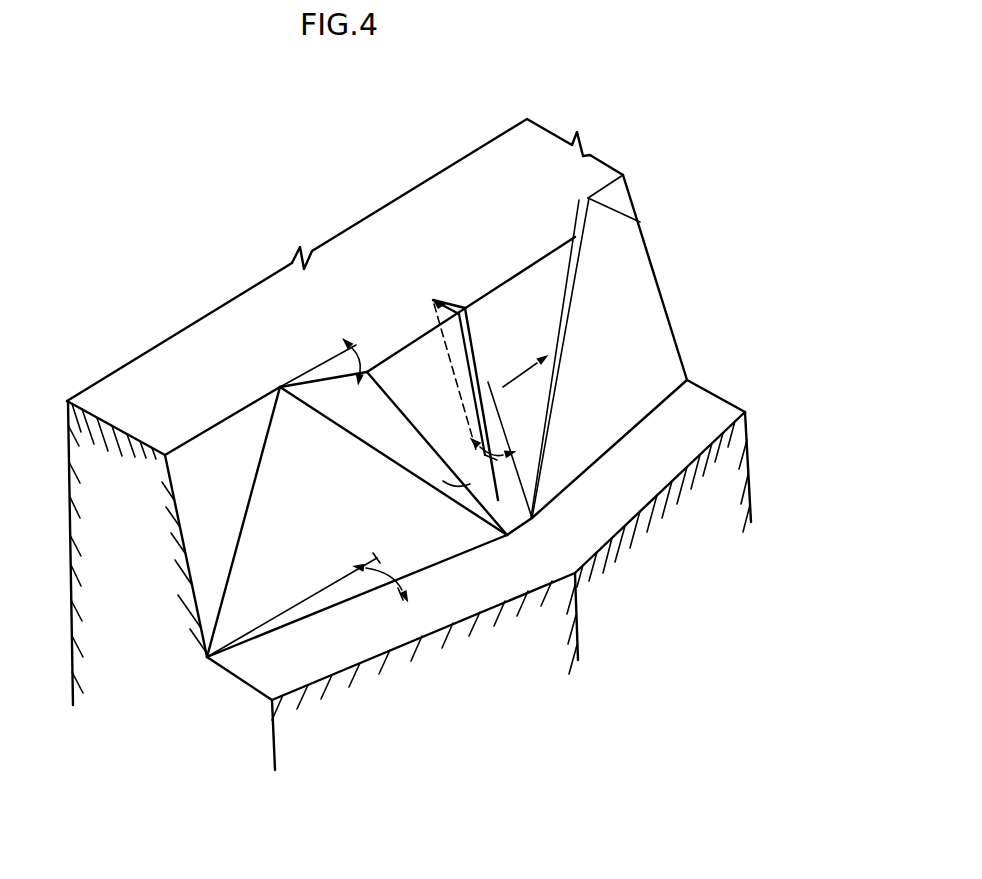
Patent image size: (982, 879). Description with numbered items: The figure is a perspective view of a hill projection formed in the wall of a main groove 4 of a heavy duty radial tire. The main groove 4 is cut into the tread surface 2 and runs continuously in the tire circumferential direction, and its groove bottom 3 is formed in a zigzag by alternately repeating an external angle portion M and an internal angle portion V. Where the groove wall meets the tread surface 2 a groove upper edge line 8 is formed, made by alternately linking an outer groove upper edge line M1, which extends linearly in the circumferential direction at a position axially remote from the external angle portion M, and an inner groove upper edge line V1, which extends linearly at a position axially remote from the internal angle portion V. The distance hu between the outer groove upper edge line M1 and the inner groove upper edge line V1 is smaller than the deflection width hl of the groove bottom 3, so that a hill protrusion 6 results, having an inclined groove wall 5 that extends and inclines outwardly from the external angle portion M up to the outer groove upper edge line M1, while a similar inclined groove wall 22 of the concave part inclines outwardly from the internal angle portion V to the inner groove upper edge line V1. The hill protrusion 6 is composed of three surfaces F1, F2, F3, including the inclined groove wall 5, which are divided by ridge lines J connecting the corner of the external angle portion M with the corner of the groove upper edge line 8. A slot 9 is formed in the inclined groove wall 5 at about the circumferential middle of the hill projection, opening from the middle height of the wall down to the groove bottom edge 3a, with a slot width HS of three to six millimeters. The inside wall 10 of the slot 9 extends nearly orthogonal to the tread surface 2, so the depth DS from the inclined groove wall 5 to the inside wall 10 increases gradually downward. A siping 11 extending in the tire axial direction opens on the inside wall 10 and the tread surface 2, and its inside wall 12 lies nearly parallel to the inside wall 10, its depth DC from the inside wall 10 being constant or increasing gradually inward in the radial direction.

The tread surface 2 is at (457, 193).
The groove upper edge line 8 is at (180, 223).
The inclined groove wall 22 is at (201, 525).
The inner groove upper edge line V1 is at (190, 437).
The outer groove upper edge line M1 is at (374, 364).
The inside wall of the siping 12 is at (437, 290).
The siping 11 is at (447, 297).
The inside wall of the slot 10 is at (470, 379).
The depth of the siping inside wall DC is at (462, 352).
The slot 9 is at (487, 470).
The inclined groove wall 5 is at (423, 407).
The internal angle portion V is at (208, 658).
The main groove 4 is at (232, 668).
The groove bottom 3 is at (375, 632).
The groove bottom edge 3a is at (593, 473).
The external angle portion M is at (436, 550).
The ridge line J is at (398, 407).
The hill protrusion 6 is at (813, 227).
The surface of the hill protrusion F1 is at (540, 299).
The surface of the hill protrusion F2 is at (565, 270).
The surface of the hill protrusion F3 is at (687, 380).
The slot width HS is at (528, 372).
The depth of the slot DS is at (508, 440).
The distance between upper edge lines hu is at (352, 348).
The deflection width of the groove bottom hl is at (386, 570).